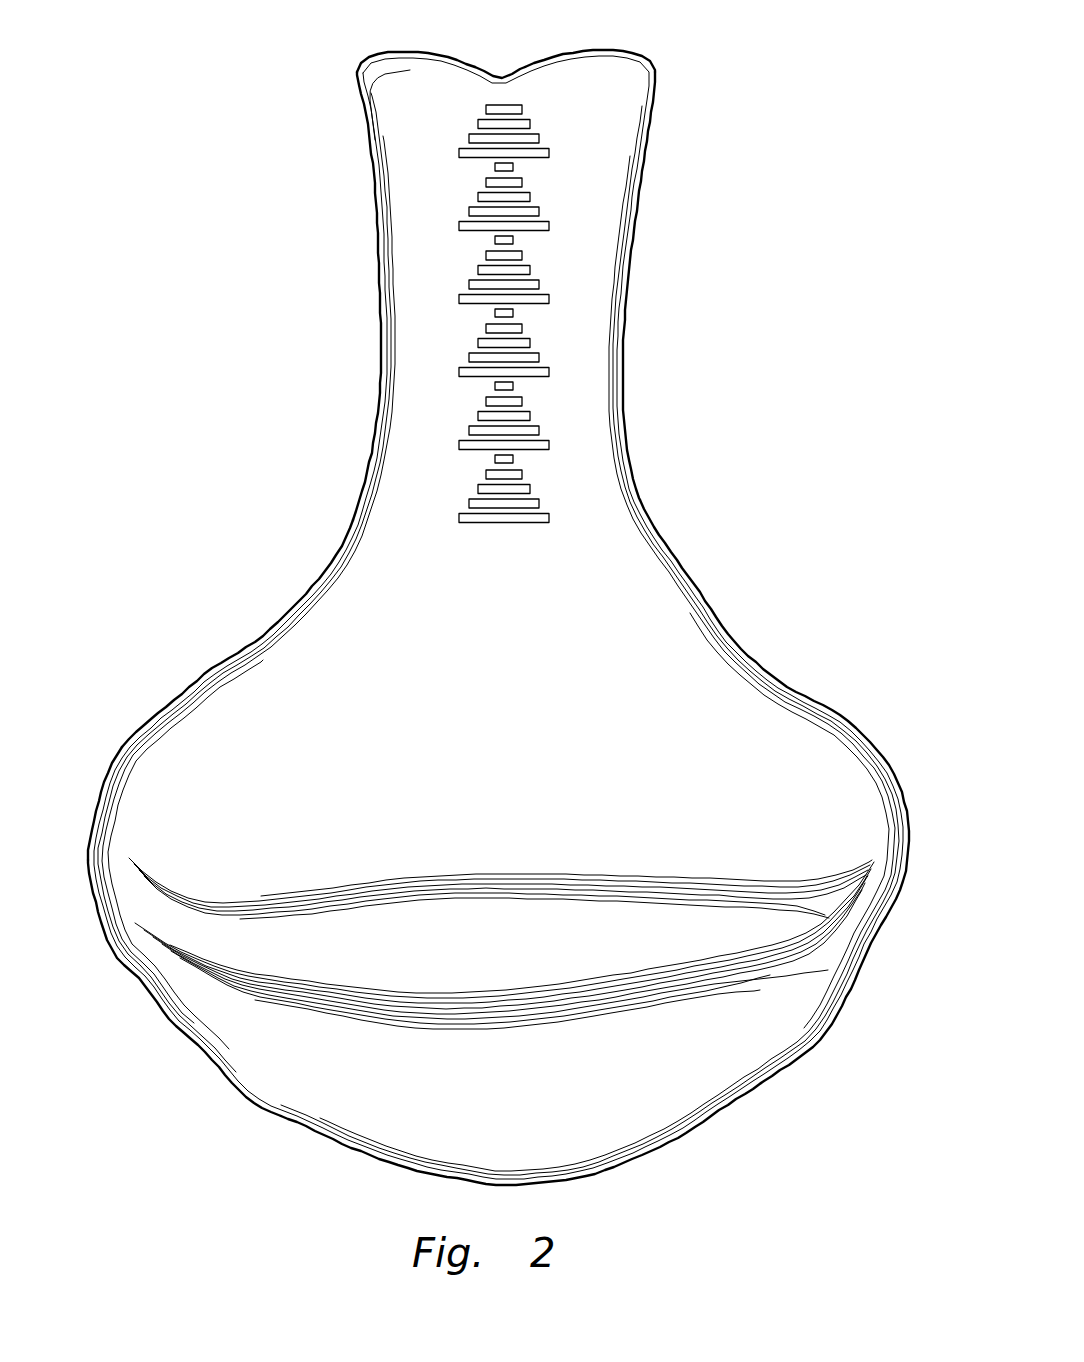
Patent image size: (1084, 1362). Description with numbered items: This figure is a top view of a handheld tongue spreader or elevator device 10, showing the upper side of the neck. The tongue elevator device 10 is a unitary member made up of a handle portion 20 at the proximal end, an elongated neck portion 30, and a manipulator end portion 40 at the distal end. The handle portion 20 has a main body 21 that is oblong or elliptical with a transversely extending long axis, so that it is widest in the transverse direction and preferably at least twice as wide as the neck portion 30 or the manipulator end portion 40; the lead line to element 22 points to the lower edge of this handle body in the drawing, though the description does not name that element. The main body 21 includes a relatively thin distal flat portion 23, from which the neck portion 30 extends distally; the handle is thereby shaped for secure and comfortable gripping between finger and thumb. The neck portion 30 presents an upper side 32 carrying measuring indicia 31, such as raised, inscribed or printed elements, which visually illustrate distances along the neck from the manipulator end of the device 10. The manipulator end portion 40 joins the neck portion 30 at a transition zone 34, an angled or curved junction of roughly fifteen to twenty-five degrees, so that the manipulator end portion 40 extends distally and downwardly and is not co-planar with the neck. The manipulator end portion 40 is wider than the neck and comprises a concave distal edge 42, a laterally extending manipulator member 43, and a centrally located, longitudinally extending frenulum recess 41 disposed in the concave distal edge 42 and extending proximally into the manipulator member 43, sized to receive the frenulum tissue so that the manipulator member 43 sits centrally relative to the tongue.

The tongue elevator device 10 is at (216, 336).
The handle portion 20 is at (214, 1092).
The main body 21 is at (122, 752).
The bottom edge of body 22 is at (692, 1137).
The distal flat portion 23 is at (703, 800).
The neck portion 30 is at (334, 411).
The measuring indicia 31 is at (531, 342).
The upper side 32 is at (413, 537).
The transition zone 34 is at (431, 297).
The manipulator end portion 40 is at (699, 96).
The frenulum recess 41 is at (505, 77).
The concave distal edge 42 is at (435, 52).
The manipulator member 43 is at (392, 95).